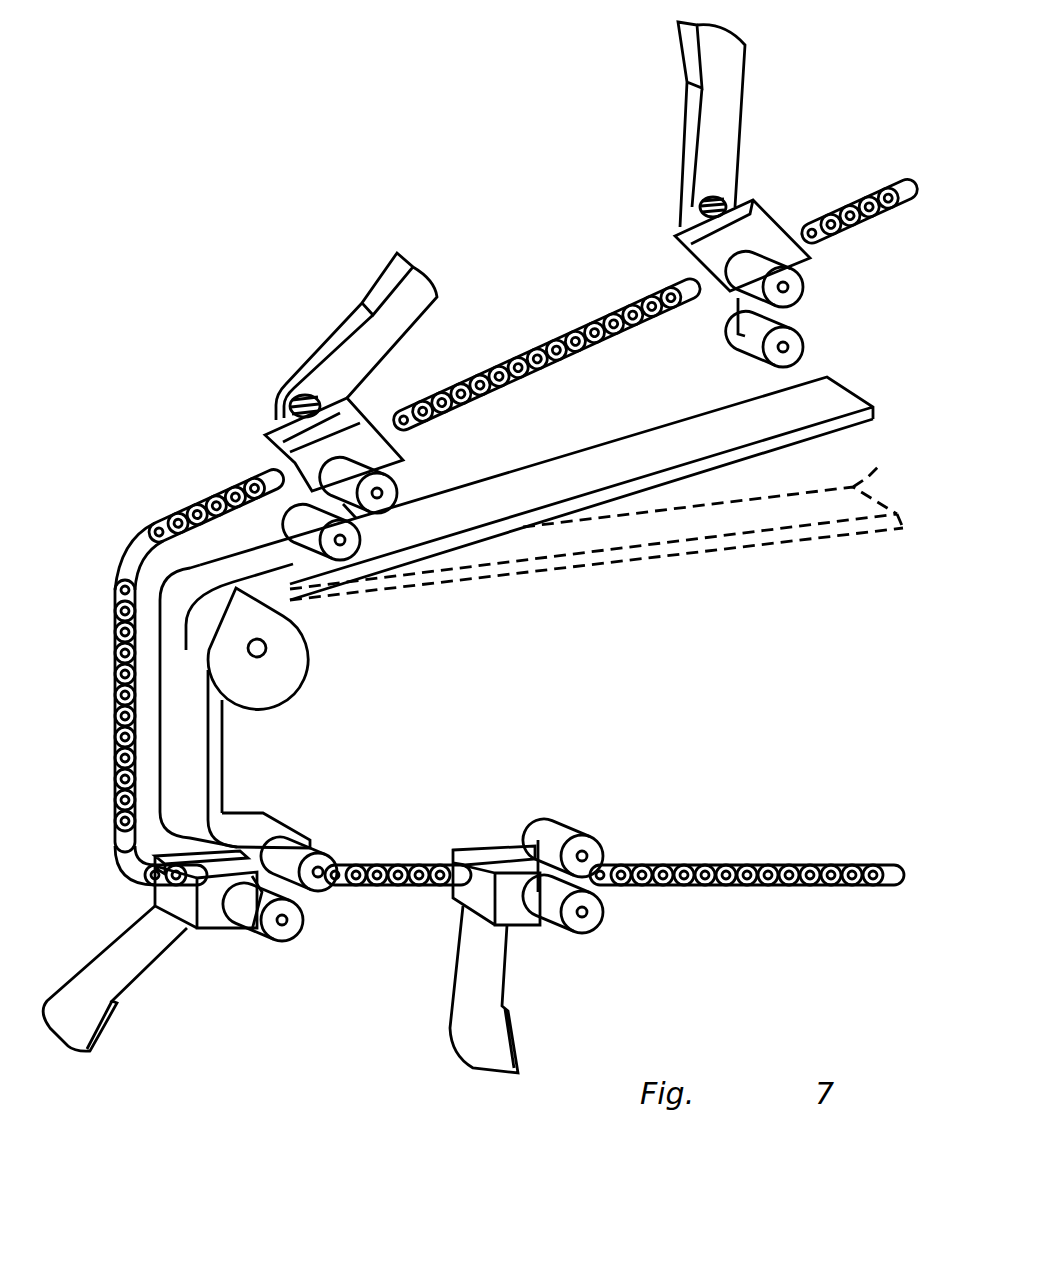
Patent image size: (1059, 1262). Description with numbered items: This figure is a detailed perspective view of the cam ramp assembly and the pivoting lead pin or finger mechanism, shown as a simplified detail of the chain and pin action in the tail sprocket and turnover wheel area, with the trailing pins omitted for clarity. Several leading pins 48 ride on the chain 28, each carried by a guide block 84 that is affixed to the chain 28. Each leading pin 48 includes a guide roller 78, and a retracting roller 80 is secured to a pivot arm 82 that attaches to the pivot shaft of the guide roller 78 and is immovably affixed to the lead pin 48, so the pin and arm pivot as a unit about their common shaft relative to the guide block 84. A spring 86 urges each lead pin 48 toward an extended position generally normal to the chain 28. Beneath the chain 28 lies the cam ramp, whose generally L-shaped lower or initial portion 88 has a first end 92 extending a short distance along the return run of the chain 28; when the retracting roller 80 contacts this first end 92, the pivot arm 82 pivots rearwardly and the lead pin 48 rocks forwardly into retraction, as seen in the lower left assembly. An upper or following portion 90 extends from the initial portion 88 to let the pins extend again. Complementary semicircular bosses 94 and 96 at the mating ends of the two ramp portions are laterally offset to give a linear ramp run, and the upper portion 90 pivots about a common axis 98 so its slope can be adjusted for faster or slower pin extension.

The chain 28 is at (583, 332).
The leading pin 48 is at (690, 108).
The guide roller 78 is at (806, 290).
The retracting roller 80 is at (808, 347).
The pivot arm 82 is at (742, 318).
The guide block 84 is at (685, 252).
The spring 86 is at (703, 212).
The lower or initial portion of the cam ramp 88 is at (222, 733).
The upper or following portion of the cam ramp 90 is at (840, 427).
The first end 92 is at (280, 813).
The semicircular boss 94 is at (292, 665).
The semicircular boss 96 is at (180, 580).
The common axis 98 is at (267, 646).